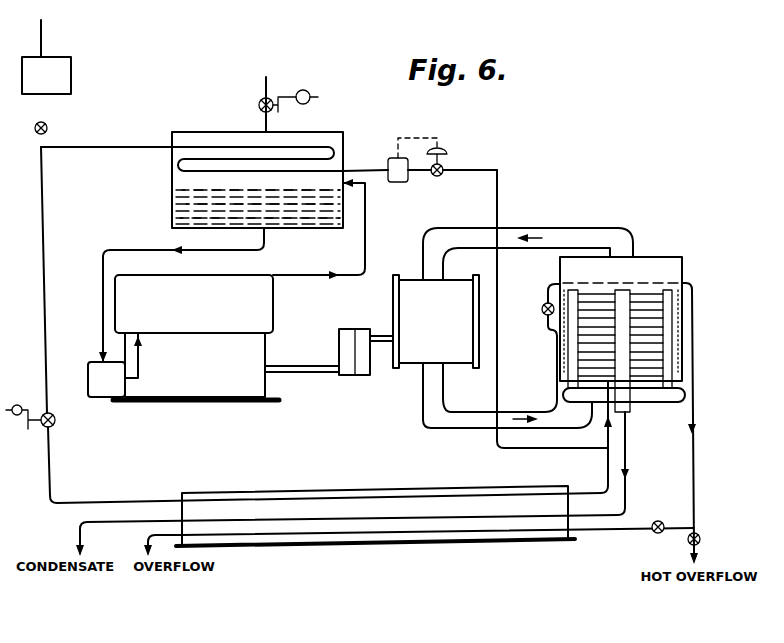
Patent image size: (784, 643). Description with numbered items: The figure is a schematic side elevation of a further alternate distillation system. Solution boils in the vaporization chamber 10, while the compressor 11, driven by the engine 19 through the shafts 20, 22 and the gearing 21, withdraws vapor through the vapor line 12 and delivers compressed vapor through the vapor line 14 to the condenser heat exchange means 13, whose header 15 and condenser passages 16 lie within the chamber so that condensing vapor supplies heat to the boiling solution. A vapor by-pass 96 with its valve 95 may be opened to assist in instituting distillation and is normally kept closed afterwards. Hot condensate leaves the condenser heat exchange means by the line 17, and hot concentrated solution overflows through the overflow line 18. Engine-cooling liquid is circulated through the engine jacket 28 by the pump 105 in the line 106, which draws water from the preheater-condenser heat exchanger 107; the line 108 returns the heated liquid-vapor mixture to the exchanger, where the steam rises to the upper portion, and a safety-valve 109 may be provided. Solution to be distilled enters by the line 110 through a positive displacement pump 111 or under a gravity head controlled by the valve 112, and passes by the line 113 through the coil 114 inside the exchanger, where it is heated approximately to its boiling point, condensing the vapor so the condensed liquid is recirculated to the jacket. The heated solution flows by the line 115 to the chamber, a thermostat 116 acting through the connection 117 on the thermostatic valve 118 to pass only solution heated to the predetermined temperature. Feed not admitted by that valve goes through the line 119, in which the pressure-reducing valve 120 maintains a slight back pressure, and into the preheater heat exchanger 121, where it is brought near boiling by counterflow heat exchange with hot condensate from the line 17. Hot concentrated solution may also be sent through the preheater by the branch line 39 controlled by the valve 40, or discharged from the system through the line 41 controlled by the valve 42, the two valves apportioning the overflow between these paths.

The vaporization chamber 10 is at (683, 268).
The compressor 11 is at (436, 321).
The vapor line 12 is at (571, 226).
The condenser heat exchange means 13 is at (572, 346).
The vapor line 14 is at (474, 421).
The header 15 is at (658, 400).
The condenser passages 16 is at (598, 293).
The condensate line 17 is at (626, 461).
The overflow line 18 is at (695, 341).
The engine 19 is at (196, 366).
The shaft 20 is at (302, 374).
The gearing 21 is at (355, 330).
The shaft 22 is at (386, 344).
The engine jacket 28 is at (273, 308).
The branch line 39 is at (608, 530).
The valve 40 is at (648, 540).
The discharge line 41 is at (700, 553).
The valve 42 is at (700, 534).
The valve 95 is at (542, 318).
The vapor by-pass 96 is at (548, 286).
The pump 105 is at (105, 397).
The line 106 is at (132, 246).
The preheater-condenser heat exchanger 107 is at (170, 197).
The line 108 is at (366, 232).
The safety-valve 109 is at (272, 98).
The feed line 110 is at (50, 35).
The positive displacement pump 111 is at (71, 78).
The valve 112 is at (48, 127).
The line 113 is at (124, 149).
The coil 114 is at (206, 146).
The line 115 is at (498, 196).
The thermostat 116 is at (389, 157).
The connection 117 is at (437, 137).
The thermostatic valve 118 is at (444, 168).
The line 119 is at (44, 232).
The pressure-reducing valve 120 is at (56, 425).
The preheater heat exchanger 121 is at (337, 490).